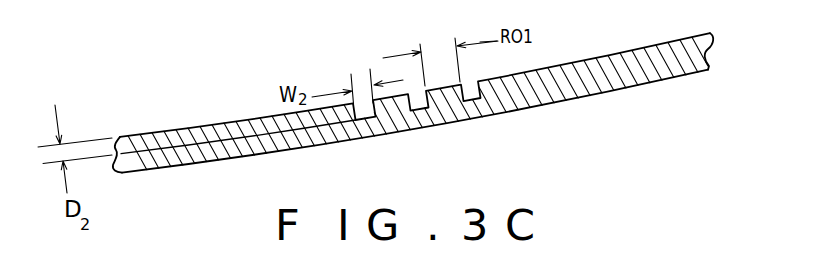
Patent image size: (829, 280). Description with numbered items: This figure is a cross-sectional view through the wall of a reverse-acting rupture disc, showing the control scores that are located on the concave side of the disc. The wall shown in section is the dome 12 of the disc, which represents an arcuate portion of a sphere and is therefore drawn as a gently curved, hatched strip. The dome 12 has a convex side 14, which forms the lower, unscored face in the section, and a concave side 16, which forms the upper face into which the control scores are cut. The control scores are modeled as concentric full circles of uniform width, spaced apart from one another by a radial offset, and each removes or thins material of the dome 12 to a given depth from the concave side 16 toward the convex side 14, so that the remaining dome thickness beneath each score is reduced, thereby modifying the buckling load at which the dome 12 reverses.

The dome 12 is at (413, 105).
The convex side 14 is at (353, 140).
The concave side 16 is at (211, 125).